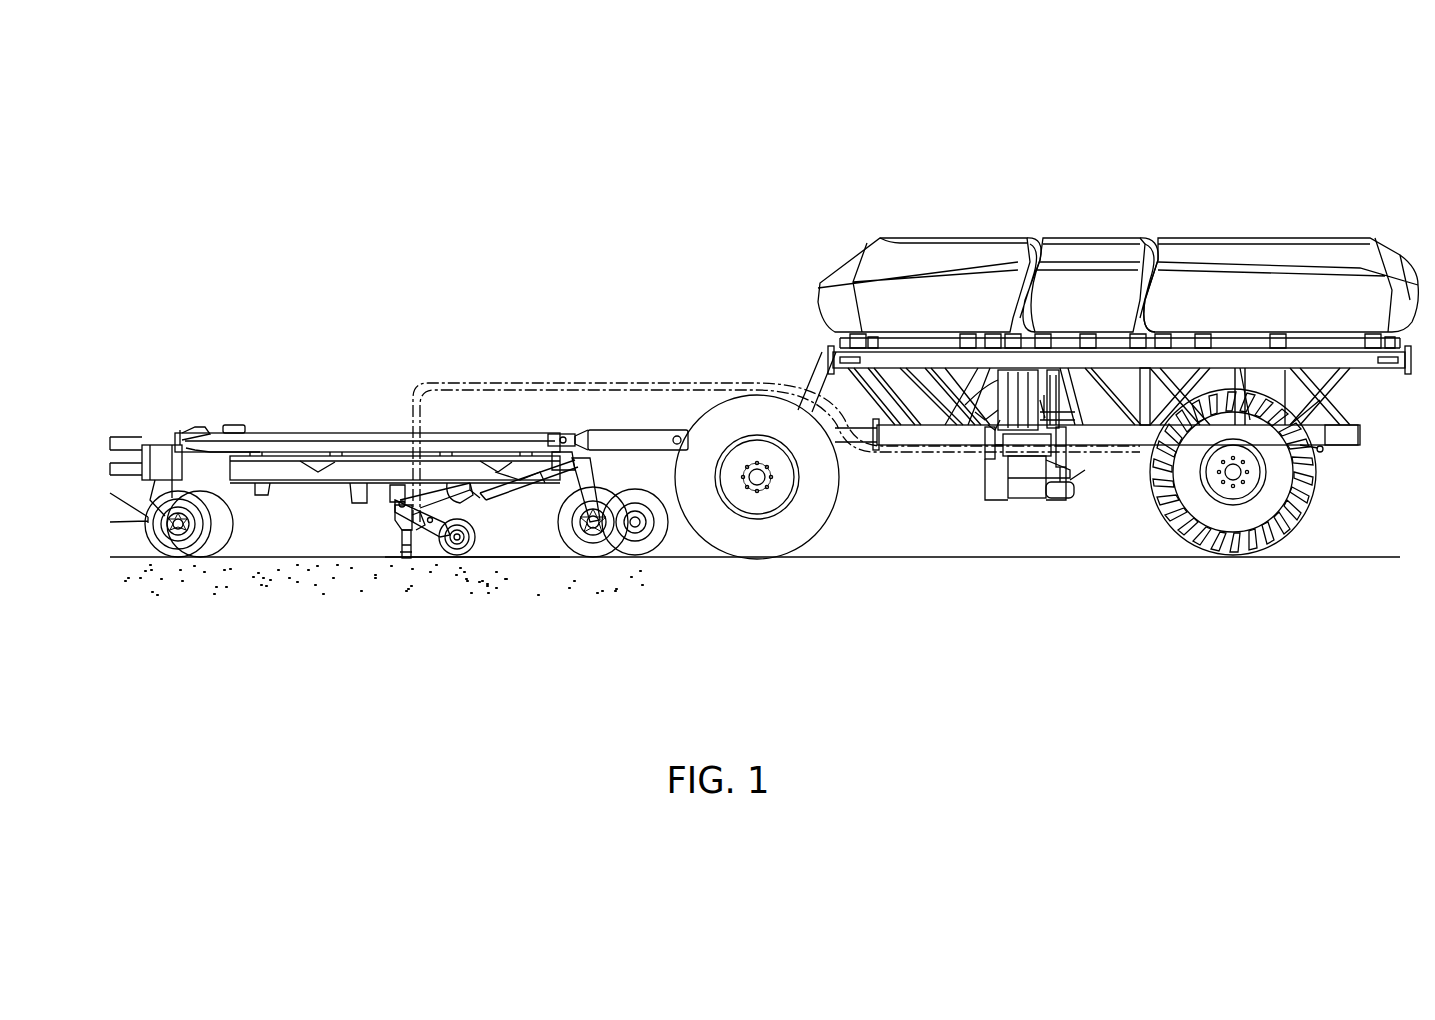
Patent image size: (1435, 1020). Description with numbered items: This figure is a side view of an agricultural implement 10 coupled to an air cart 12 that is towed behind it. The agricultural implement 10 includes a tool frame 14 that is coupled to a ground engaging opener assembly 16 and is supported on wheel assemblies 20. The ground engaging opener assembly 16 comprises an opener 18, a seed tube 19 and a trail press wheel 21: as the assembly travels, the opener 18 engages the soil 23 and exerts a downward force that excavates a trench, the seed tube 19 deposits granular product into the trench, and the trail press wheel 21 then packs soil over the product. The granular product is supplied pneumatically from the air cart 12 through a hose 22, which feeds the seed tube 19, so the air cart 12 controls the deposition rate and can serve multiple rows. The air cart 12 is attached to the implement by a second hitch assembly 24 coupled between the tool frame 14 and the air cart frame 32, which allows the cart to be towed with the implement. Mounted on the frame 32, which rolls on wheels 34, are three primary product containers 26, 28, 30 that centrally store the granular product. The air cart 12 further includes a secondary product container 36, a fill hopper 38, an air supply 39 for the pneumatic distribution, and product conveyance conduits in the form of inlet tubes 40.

The agricultural implement 10 is at (339, 377).
The air cart 12 is at (1092, 190).
The tool frame 14 is at (388, 455).
The ground engaging opener assembly 16 is at (383, 547).
The opener 18 is at (400, 560).
The seed tube 19 is at (420, 540).
The wheel assemblies 20 is at (185, 558).
The trail press wheel 21 is at (476, 530).
The hose 22 is at (468, 383).
The soil 23 is at (500, 550).
The second hitch assembly 24 is at (572, 432).
The primary product container 26 is at (892, 240).
The primary product container 28 is at (1068, 243).
The primary product container 30 is at (1223, 248).
The air cart frame 32 is at (893, 447).
The wheels 34 is at (1248, 548).
The secondary product container 36 is at (1058, 407).
The fill hopper 38 is at (1018, 448).
The air supply 39 is at (1075, 493).
The inlet tubes 40 is at (1002, 400).